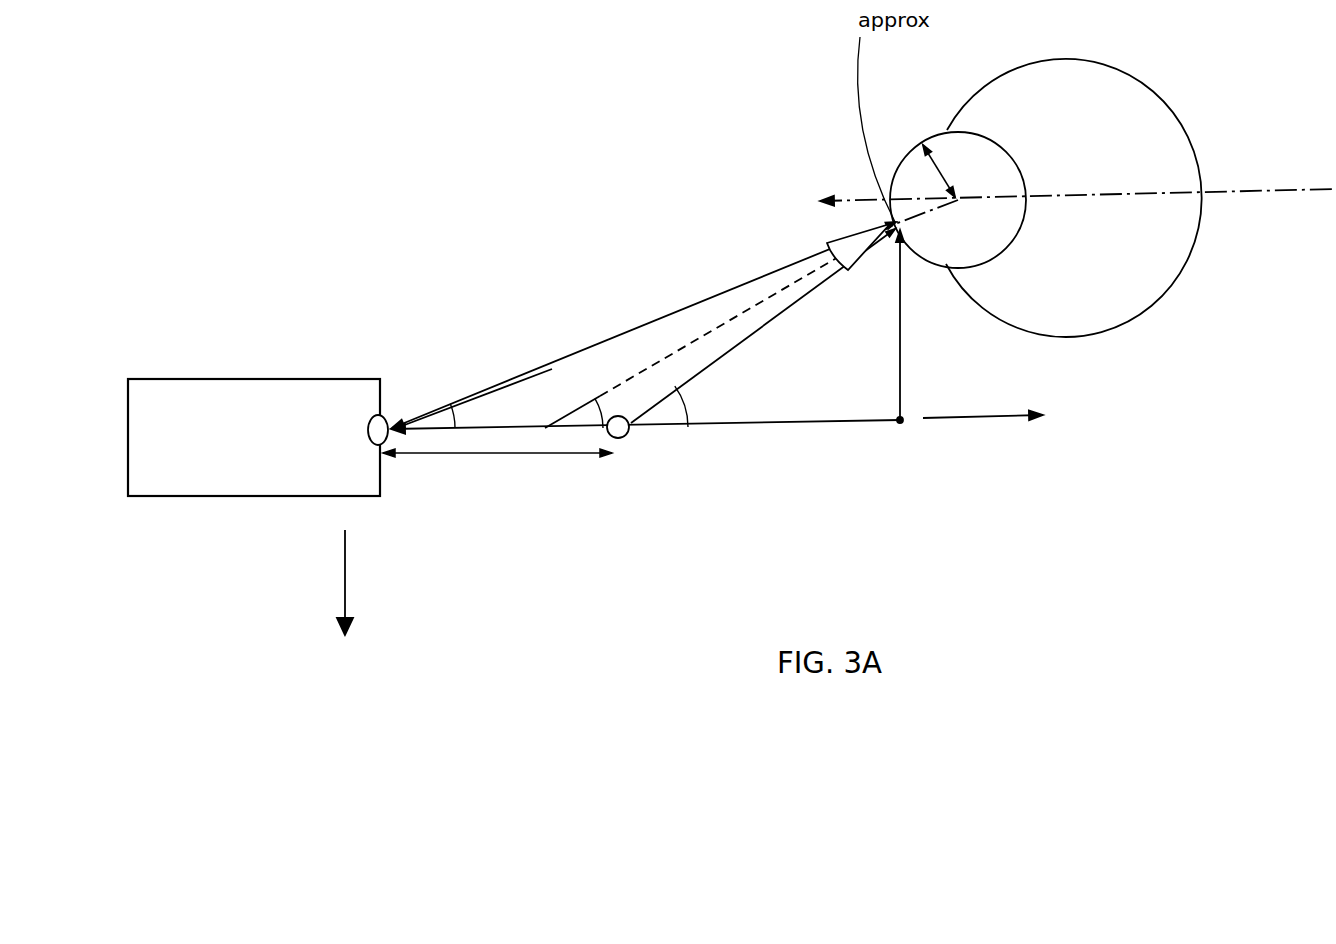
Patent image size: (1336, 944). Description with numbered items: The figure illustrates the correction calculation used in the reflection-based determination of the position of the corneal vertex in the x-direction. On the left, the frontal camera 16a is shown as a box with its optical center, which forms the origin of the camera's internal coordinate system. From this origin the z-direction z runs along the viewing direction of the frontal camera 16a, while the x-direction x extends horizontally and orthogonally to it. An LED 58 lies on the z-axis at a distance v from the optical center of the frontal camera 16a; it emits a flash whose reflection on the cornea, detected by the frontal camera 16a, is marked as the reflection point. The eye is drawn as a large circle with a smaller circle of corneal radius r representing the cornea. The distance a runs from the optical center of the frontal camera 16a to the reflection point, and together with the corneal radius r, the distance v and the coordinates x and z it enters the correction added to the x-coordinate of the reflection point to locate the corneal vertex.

The frontal camera 16a is at (337, 379).
The LED 58 is at (618, 436).
The distance of the LED from the optical center of the frontal camera v is at (483, 455).
The z-direction z is at (726, 419).
The x-direction x is at (343, 596).
The distance of the optical center of the frontal camera from the reflection point a is at (577, 350).
The corneal radius r is at (939, 171).